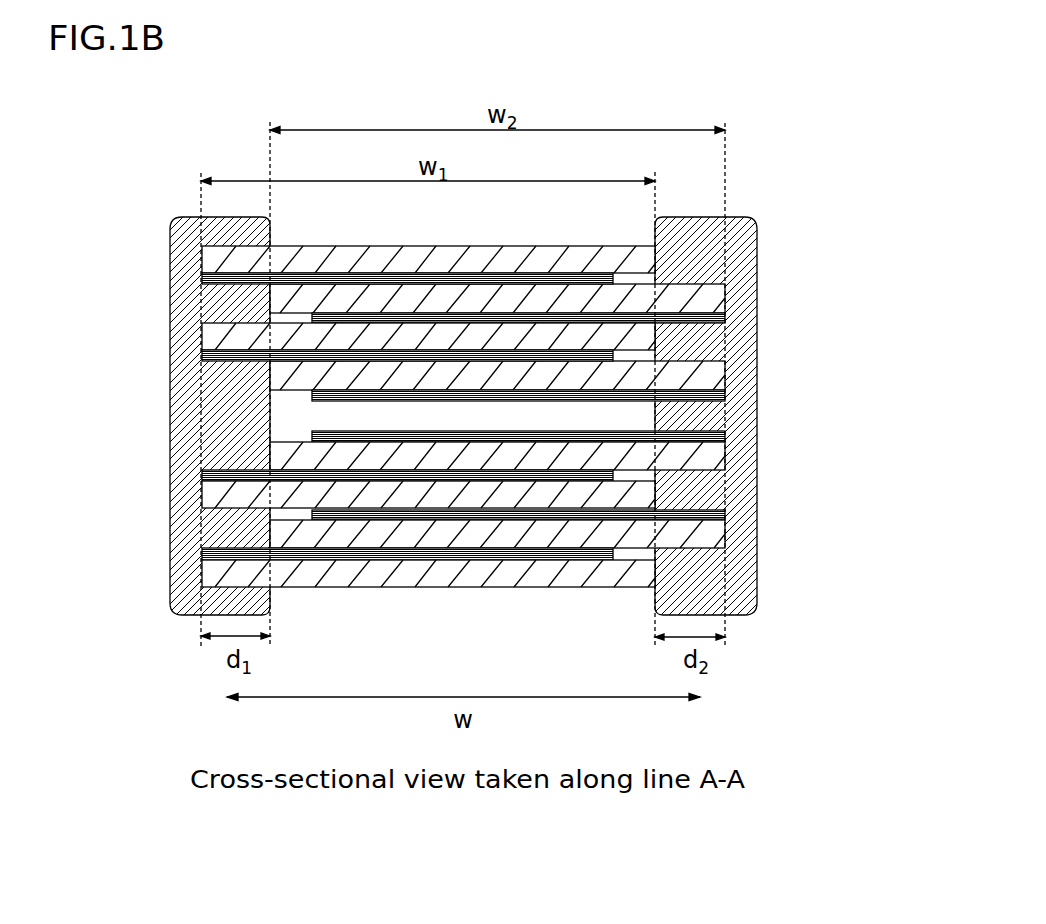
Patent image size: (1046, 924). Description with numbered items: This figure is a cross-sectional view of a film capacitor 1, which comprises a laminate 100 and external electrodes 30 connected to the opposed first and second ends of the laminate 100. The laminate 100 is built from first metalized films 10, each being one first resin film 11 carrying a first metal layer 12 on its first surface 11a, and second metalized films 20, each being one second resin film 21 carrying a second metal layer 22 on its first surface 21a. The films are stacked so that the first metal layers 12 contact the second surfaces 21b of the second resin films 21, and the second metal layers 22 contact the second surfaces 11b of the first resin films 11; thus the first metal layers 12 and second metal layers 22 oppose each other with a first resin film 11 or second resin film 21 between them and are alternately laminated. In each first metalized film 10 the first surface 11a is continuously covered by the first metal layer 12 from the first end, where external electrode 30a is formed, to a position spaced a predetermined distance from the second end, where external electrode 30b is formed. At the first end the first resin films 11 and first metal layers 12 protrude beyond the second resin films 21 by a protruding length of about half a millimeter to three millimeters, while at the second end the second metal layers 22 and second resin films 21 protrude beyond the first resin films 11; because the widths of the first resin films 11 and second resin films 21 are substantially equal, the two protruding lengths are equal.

The film capacitor 1 is at (193, 126).
The first metalized film 10 is at (348, 390).
The first resin film 11 is at (212, 260).
The first surface of the first resin film 11a is at (250, 284).
The second surface of the first resin film 11b is at (249, 246).
The first metal layer 12 is at (202, 279).
The second metalized film 20 is at (575, 393).
The second resin film 21 is at (714, 300).
The first surface of the second resin film 21a is at (685, 323).
The second surface of the second resin film 21b is at (688, 285).
The second metal layer 22 is at (717, 316).
The external electrodes 30 is at (463, 449).
The external electrode 30a is at (177, 601).
The external electrode 30b is at (747, 595).
The laminate 100 is at (461, 430).